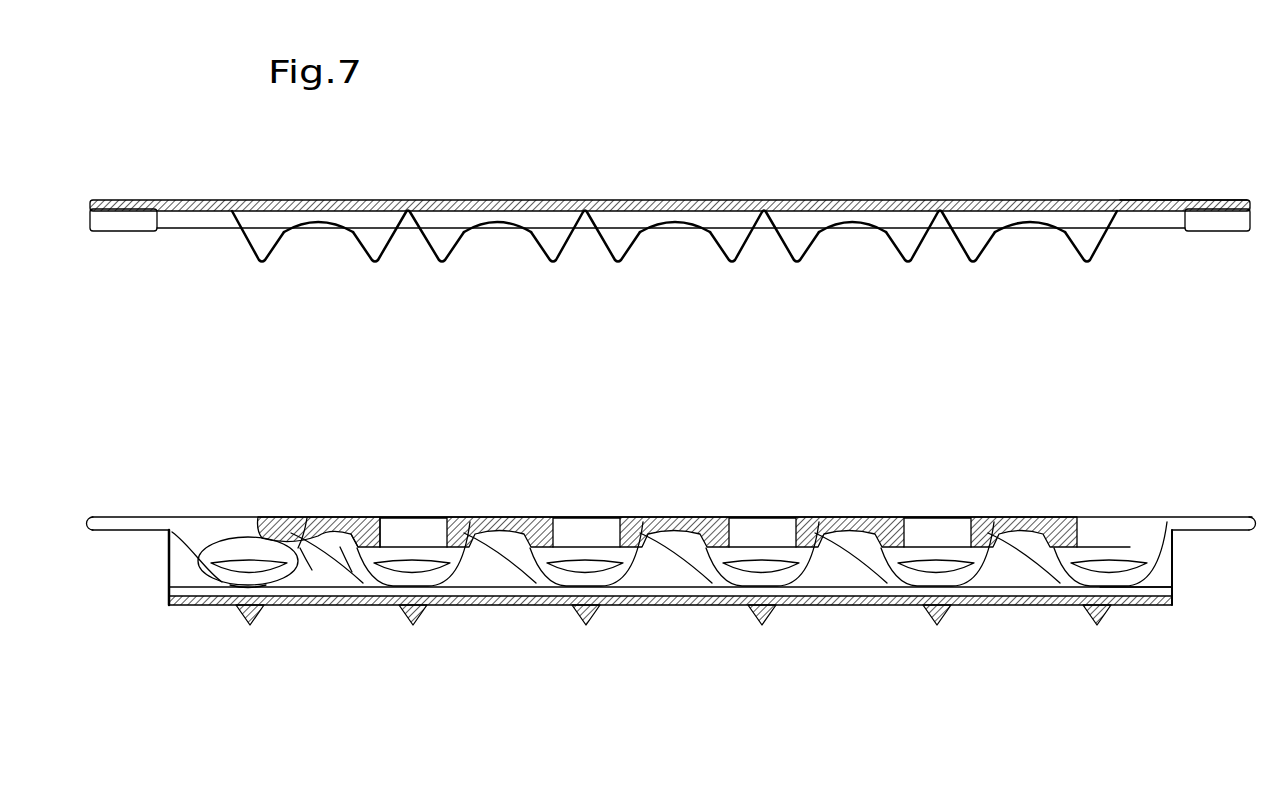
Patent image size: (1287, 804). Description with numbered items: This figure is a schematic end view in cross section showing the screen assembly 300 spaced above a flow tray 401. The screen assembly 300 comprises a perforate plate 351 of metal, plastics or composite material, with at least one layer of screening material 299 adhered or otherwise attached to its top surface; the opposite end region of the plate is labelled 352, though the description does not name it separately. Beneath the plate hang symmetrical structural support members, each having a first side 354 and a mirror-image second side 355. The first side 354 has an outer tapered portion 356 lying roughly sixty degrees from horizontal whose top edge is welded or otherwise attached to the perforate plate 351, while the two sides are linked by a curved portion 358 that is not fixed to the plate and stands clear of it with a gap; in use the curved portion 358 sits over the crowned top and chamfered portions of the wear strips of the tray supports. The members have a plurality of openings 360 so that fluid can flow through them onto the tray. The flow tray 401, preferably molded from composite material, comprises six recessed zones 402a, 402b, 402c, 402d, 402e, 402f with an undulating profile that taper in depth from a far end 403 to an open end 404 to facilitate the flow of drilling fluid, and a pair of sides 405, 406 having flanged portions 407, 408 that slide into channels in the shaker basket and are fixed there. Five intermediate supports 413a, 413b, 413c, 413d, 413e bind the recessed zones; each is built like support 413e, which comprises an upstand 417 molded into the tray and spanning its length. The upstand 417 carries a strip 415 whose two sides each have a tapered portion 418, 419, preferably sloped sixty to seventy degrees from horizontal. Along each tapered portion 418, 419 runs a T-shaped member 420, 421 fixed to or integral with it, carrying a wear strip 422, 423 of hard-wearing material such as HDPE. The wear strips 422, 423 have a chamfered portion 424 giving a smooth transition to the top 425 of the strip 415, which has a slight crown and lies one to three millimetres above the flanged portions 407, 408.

The layer of screening material 299 is at (771, 200).
The screen assembly 300 is at (667, 196).
The perforate plate 351 is at (1162, 200).
The second end portion 352 is at (1250, 218).
The first side 354 is at (962, 257).
The second side 355 is at (1092, 253).
The outer tapered portion 356 is at (253, 218).
The curved portion 358 is at (1036, 223).
The openings 360 is at (190, 200).
The flow tray 401 is at (646, 612).
The recessed zone 402a is at (240, 530).
The recessed zone 402b is at (421, 530).
The recessed zone 402c is at (588, 537).
The recessed zone 402d is at (765, 537).
The recessed zone 402e is at (925, 540).
The recessed zone 402f is at (1100, 540).
The far end 403 is at (1140, 535).
The open end 404 is at (1172, 570).
The side 405 is at (125, 533).
The side 406 is at (1228, 532).
The flanged portion 407 is at (98, 515).
The flanged portion 408 is at (1215, 516).
The intermediate support 413a is at (1032, 548).
The intermediate support 413b is at (852, 548).
The intermediate support 413c is at (678, 552).
The intermediate support 413d is at (497, 548).
The intermediate support 413e is at (314, 560).
The strip 415 is at (341, 505).
The upstand 417 is at (285, 550).
The tapered portion 418 is at (296, 560).
The tapered portion 419 is at (335, 560).
The T-shaped member 420 is at (242, 528).
The T-shaped member 421 is at (384, 522).
The wear strip 422 is at (238, 562).
The wear strip 423 is at (385, 530).
The chamfered portion 424 is at (280, 520).
The top 425 is at (316, 516).